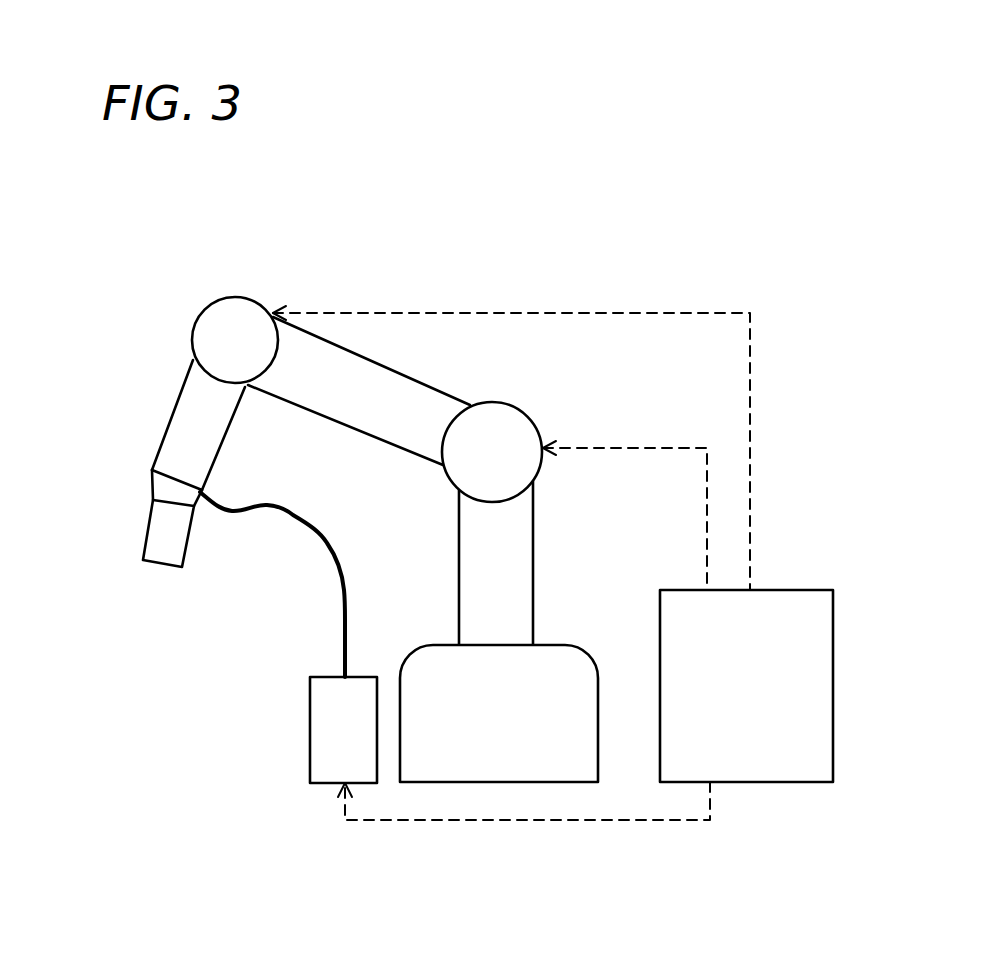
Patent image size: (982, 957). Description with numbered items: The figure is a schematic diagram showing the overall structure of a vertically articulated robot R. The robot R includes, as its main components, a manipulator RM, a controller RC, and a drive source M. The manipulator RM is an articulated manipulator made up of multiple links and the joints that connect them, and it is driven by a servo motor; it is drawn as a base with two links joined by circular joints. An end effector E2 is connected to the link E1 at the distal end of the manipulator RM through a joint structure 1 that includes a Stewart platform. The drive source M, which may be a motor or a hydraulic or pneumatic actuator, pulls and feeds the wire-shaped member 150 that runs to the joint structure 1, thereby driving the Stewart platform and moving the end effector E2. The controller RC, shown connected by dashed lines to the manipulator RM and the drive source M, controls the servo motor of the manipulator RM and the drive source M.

The robot R is at (588, 252).
The link E1 is at (177, 418).
The joint structure 1 is at (153, 485).
The end effector E2 is at (155, 541).
The wire-shaped member 150 is at (338, 623).
The drive source M is at (357, 745).
The manipulator RM is at (521, 729).
The controller RC is at (765, 708).